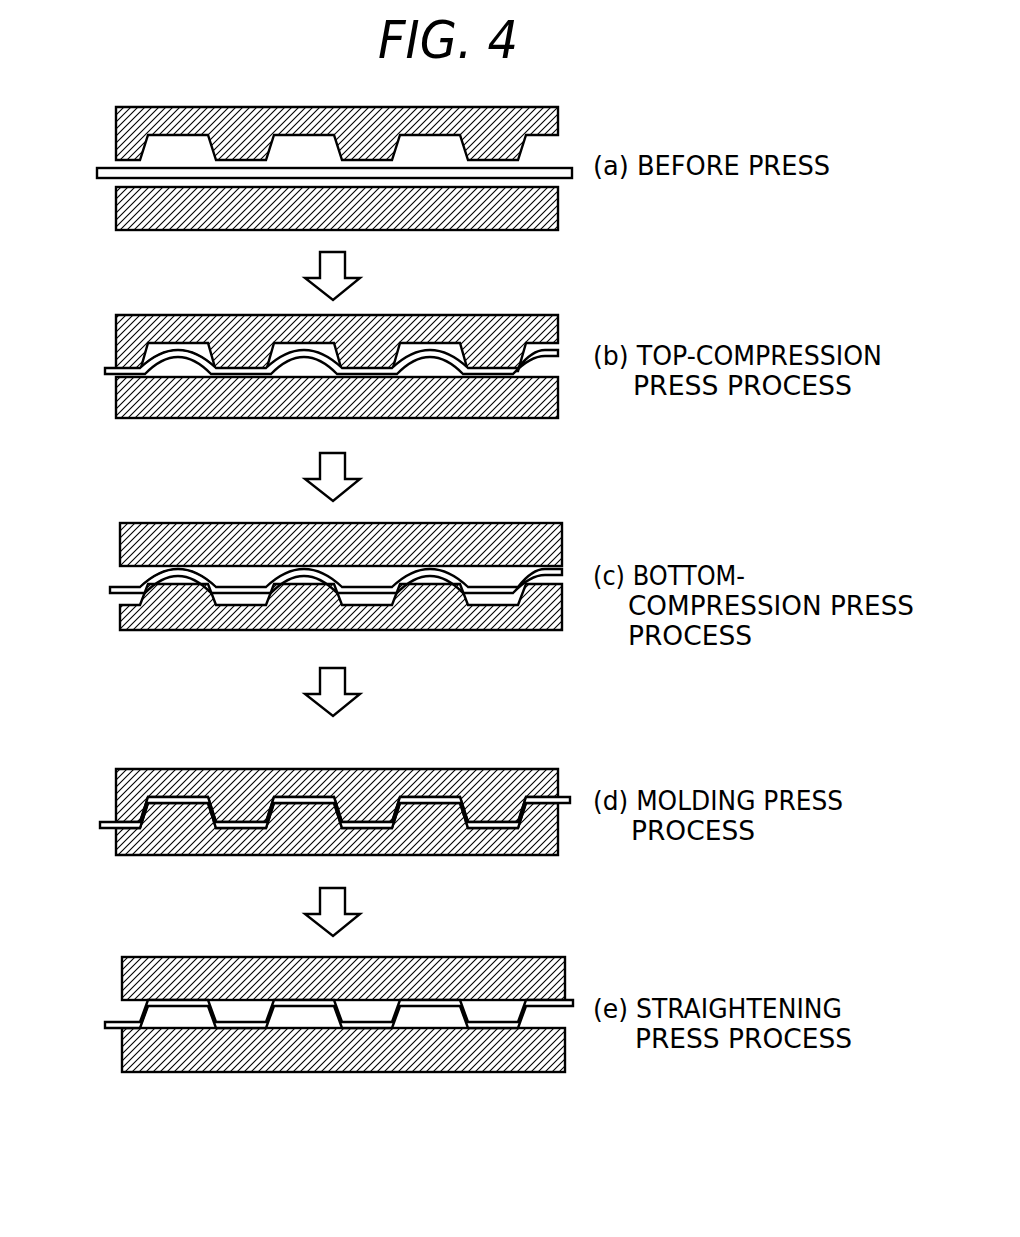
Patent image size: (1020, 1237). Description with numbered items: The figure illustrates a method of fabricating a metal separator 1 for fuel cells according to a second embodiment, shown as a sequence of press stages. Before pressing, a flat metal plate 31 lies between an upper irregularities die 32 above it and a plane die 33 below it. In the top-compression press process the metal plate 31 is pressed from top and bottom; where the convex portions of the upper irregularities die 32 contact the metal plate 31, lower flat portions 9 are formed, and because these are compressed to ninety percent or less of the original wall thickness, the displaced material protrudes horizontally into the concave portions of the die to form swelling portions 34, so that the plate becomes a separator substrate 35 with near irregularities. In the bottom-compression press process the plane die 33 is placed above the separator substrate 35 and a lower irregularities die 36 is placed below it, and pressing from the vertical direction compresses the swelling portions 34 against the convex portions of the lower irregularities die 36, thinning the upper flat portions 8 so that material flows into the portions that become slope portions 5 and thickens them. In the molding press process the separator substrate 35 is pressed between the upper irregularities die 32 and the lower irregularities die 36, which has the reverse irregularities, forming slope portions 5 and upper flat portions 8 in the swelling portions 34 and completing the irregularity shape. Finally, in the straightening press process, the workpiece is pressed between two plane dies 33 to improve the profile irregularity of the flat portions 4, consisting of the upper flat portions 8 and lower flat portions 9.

The metal separator 1 is at (100, 824).
The flat portions 4 is at (373, 377).
The slope portions 5 is at (148, 824).
The upper flat portions 8 is at (178, 796).
The lower flat portions 9 is at (490, 377).
The metal plate 31 is at (97, 173).
The upper irregularities die 32 is at (116, 115).
The plane die 33 is at (116, 220).
The swelling portion 34 is at (178, 350).
The separator substrate 35 is at (105, 371).
The lower irregularities die 36 is at (120, 622).